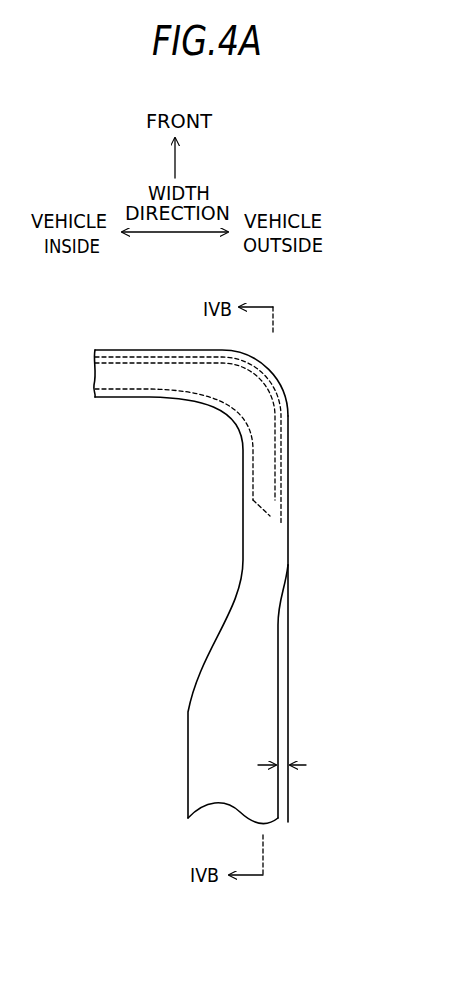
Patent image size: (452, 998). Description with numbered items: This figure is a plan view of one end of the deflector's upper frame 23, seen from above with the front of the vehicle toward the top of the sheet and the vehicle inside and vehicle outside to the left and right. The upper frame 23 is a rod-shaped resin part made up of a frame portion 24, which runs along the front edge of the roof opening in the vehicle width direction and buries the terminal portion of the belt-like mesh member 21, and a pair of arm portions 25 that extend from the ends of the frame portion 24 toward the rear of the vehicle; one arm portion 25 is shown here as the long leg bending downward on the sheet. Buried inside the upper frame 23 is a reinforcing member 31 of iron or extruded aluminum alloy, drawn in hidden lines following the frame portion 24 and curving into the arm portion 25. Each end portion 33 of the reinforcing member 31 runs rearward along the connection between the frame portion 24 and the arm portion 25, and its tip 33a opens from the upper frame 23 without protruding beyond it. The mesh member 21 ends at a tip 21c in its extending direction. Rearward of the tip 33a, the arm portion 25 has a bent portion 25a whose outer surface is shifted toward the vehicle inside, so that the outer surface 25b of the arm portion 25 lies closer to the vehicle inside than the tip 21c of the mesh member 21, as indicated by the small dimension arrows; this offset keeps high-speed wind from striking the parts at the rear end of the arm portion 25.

The mesh member 21 is at (230, 350).
The frame portion 24 is at (126, 350).
The reinforcing member 31 is at (272, 370).
The end portion 33 is at (291, 449).
The tip 21c is at (290, 497).
The tip 33a is at (285, 510).
The arm portion 25 is at (186, 711).
The bent portion 25a is at (279, 632).
The outer surface 25b is at (289, 729).
The upper frame 23 is at (272, 678).